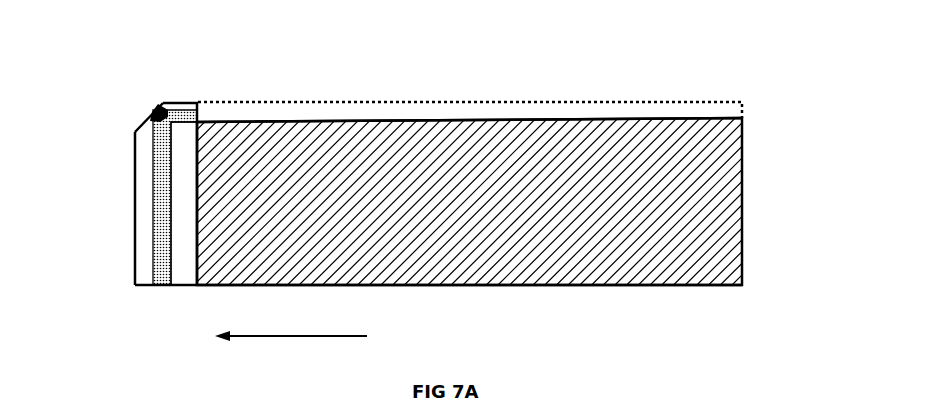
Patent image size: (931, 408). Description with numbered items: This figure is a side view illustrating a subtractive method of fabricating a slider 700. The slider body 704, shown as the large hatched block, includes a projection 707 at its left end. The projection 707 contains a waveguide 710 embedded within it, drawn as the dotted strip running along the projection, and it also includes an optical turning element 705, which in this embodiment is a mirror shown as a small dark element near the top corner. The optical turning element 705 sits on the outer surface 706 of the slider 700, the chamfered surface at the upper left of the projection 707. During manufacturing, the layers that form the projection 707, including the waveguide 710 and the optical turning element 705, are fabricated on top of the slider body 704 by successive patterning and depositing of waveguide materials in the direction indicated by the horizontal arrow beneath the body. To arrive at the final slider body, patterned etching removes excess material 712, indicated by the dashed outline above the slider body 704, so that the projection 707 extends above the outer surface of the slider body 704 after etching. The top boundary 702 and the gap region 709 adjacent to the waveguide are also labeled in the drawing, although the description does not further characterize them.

The slider 700 is at (378, 50).
The top surface of cell 702 is at (478, 121).
The slider body 704 is at (687, 157).
The optical turning element 705 is at (157, 110).
The outer surface 706 is at (143, 122).
The projection 707 is at (130, 210).
The gap 709 is at (193, 265).
The waveguide 710 is at (163, 162).
The excess material 712 is at (560, 107).